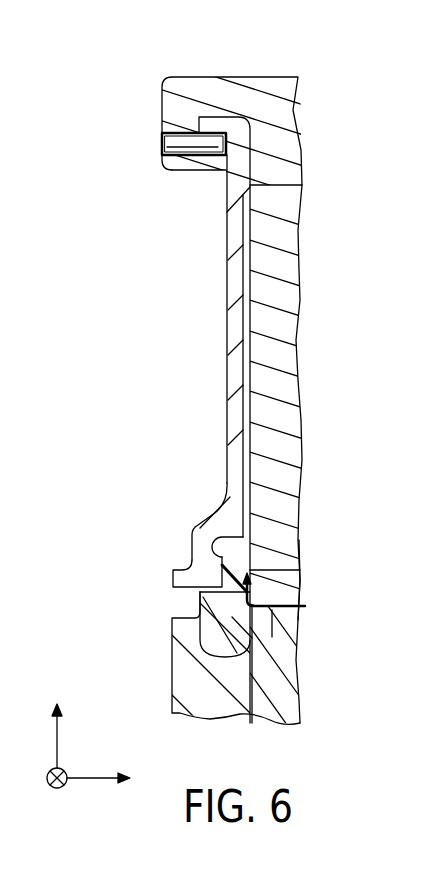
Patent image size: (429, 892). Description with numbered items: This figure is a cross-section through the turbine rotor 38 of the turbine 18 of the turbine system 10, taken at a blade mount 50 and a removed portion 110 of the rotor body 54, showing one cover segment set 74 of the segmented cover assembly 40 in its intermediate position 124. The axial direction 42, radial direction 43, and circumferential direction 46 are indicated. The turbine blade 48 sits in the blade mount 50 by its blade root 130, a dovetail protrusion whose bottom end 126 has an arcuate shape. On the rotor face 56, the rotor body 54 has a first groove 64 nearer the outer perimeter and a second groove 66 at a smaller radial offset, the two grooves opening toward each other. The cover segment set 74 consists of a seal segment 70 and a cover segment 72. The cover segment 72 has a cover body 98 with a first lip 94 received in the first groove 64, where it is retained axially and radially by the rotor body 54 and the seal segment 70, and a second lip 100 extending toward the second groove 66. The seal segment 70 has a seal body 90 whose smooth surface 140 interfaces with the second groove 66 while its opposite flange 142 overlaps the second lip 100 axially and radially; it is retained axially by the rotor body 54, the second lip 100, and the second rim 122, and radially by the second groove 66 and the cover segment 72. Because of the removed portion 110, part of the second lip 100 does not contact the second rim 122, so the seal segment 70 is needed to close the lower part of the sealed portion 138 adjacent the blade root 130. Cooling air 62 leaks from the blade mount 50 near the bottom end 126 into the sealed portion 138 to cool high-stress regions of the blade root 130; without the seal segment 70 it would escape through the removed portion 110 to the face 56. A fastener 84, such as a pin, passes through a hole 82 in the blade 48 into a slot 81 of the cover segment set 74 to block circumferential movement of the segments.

The turbine system 10 is at (120, 126).
The turbine 18 is at (105, 166).
The turbine rotor 38 is at (287, 712).
The segmented cover assembly 40 is at (98, 469).
The axial direction 42 is at (93, 775).
The radial direction 43 is at (57, 747).
The circumferential direction 46 is at (57, 797).
The turbine blade 48 is at (281, 233).
The turbine blade mount 50 is at (290, 587).
The rotor body 54 is at (281, 121).
The rotor face 56 is at (167, 698).
The cooling air 62 is at (347, 640).
The first groove 64 is at (227, 119).
The second groove 66 is at (232, 660).
The seal segment 70 is at (218, 647).
The cover segment 72 is at (203, 520).
The cover segment set 74 is at (230, 547).
The slot 81 is at (212, 167).
The hole 82 is at (180, 133).
The fastener 84 is at (162, 145).
The seal body 90 is at (253, 640).
The first lip 94 is at (228, 172).
The cover body 98 is at (231, 382).
The second lip 100 is at (177, 582).
The removed portion 110 is at (200, 598).
The second rim 122 is at (183, 643).
The intermediate position 124 is at (326, 66).
The bottom end 126 is at (272, 610).
The blade root 130 is at (272, 557).
The sealed portion 138 is at (247, 367).
The smooth surface 140 is at (208, 650).
The flange 142 is at (230, 557).